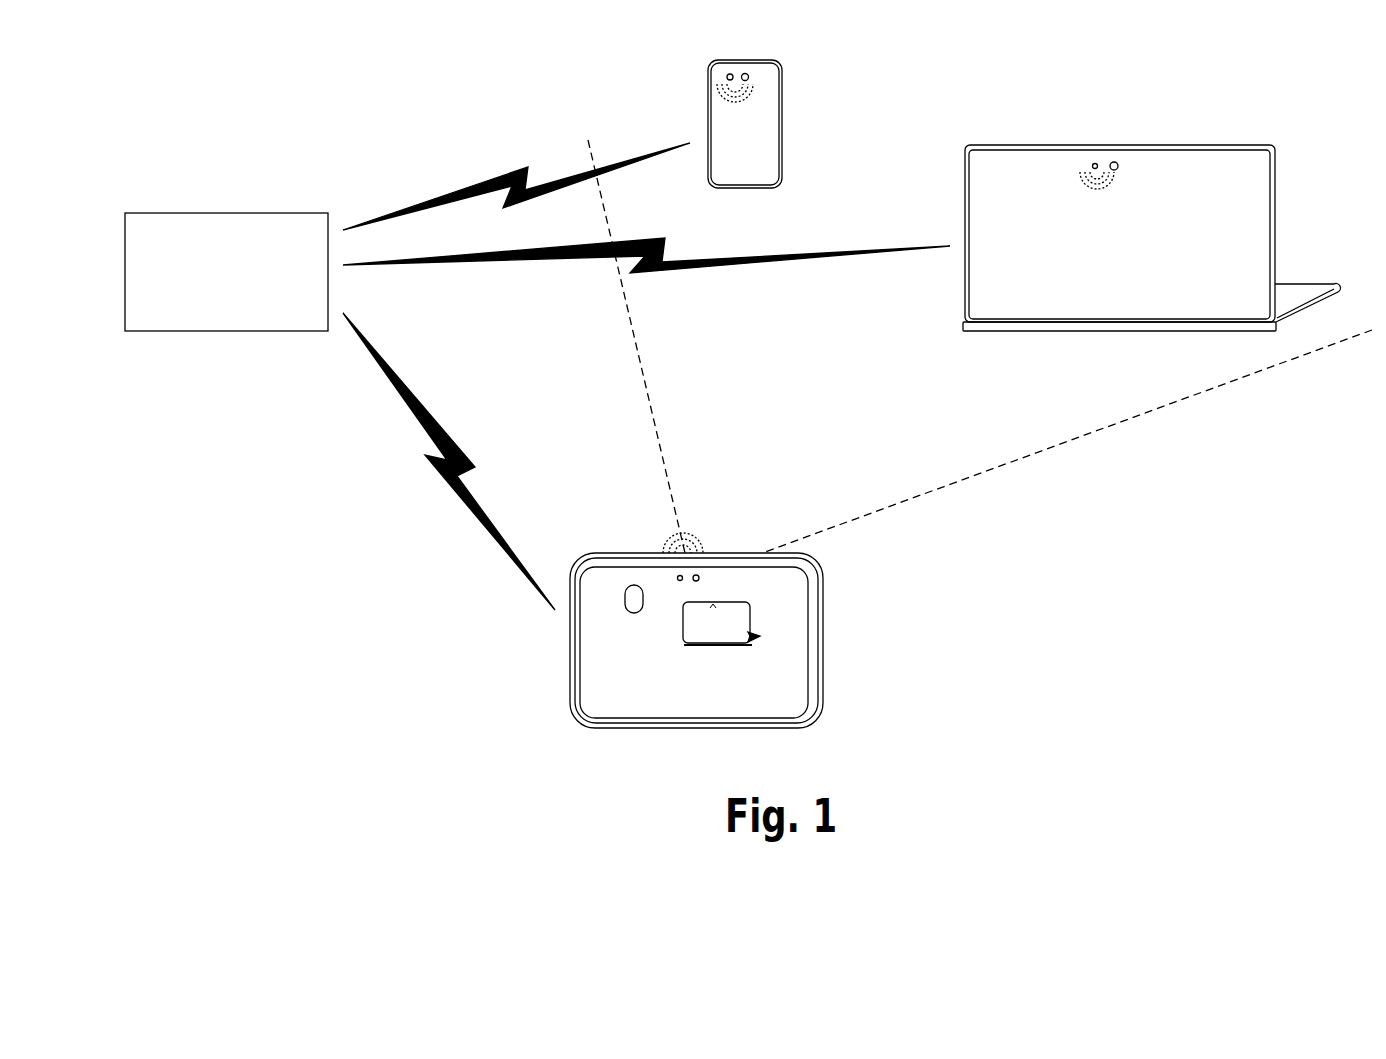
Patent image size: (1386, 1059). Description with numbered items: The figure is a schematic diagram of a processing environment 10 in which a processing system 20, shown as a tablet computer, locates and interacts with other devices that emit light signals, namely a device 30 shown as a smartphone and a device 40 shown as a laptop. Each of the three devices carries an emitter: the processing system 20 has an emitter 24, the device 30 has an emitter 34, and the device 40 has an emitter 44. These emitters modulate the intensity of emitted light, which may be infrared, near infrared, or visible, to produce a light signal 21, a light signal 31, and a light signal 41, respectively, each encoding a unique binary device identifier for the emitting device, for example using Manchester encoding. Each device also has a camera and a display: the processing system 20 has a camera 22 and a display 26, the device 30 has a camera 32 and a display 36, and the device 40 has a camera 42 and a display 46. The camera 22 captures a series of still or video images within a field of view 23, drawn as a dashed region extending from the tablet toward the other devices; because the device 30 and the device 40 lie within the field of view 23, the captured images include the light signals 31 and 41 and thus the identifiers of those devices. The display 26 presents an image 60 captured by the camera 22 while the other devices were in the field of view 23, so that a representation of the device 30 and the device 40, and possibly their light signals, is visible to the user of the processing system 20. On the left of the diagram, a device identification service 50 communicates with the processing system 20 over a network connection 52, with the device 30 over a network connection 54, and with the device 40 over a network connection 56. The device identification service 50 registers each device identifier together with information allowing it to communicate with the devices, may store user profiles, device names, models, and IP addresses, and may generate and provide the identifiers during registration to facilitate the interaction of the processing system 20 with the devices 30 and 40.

The processing environment 10 is at (388, 609).
The processing system 20 is at (820, 682).
The light signal 21 is at (660, 513).
The camera 22 is at (700, 579).
The field of view 23 is at (875, 512).
The emitter 24 is at (677, 575).
The display 26 is at (777, 653).
The device 30 is at (783, 140).
The light signal 31 is at (712, 112).
The camera 32 is at (749, 78).
The emitter 34 is at (726, 77).
The display 36 is at (755, 123).
The device 40 is at (1325, 297).
The light signal 41 is at (1075, 198).
The camera 42 is at (1116, 160).
The emitter 44 is at (1094, 161).
The display 46 is at (1171, 220).
The device identification service 50 is at (191, 333).
The network connection 52 is at (445, 487).
The network connection 54 is at (492, 175).
The network connection 56 is at (680, 268).
The image 60 is at (705, 604).